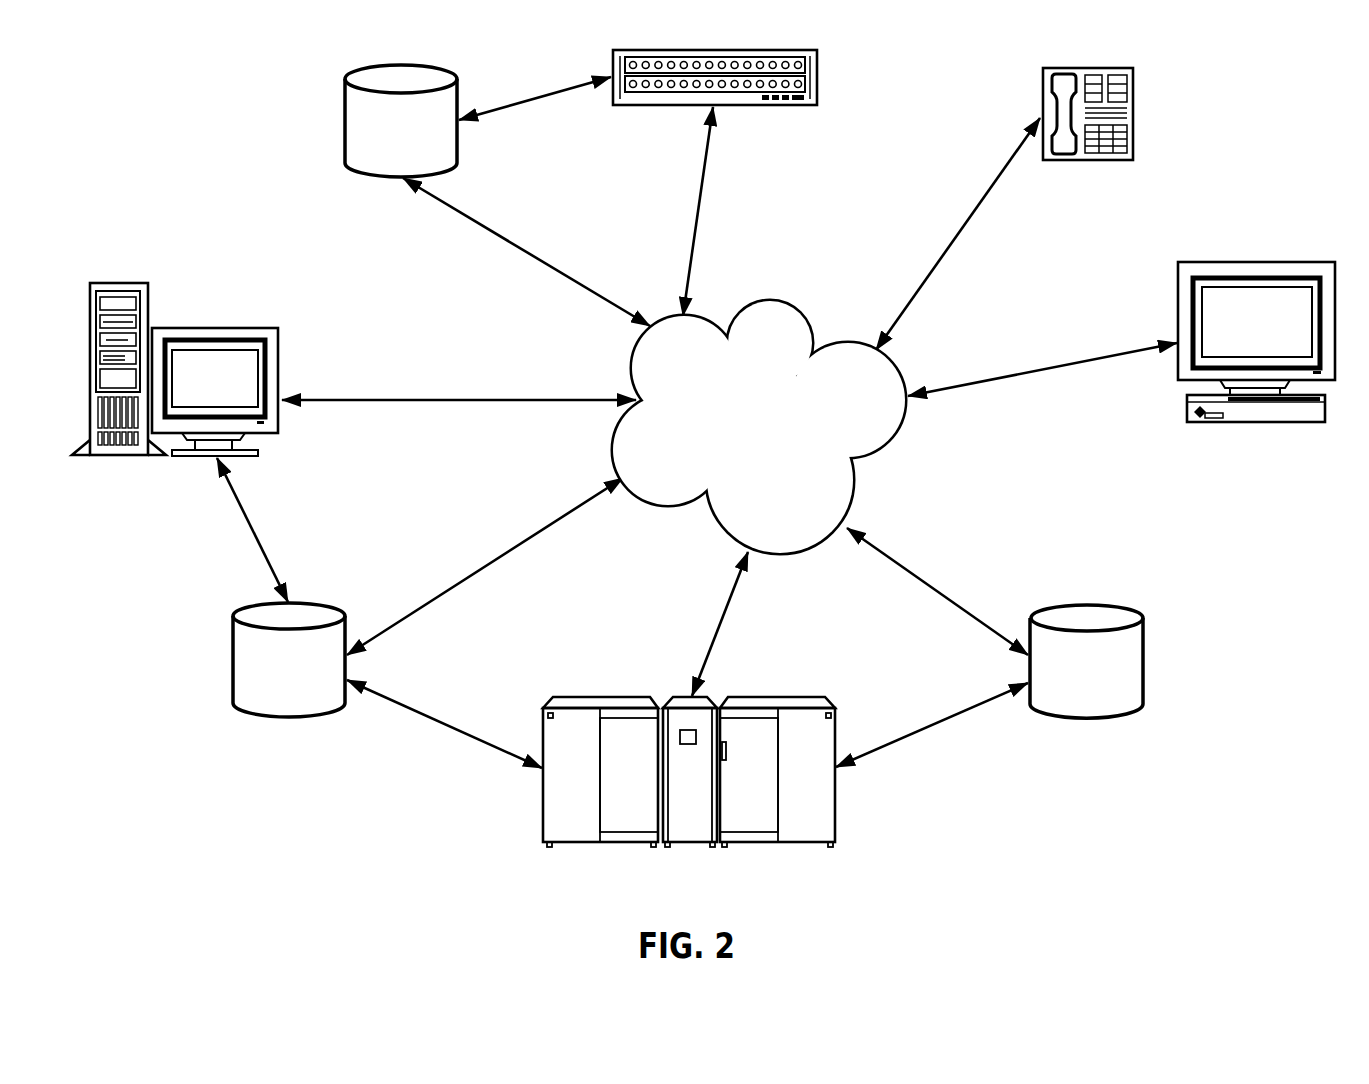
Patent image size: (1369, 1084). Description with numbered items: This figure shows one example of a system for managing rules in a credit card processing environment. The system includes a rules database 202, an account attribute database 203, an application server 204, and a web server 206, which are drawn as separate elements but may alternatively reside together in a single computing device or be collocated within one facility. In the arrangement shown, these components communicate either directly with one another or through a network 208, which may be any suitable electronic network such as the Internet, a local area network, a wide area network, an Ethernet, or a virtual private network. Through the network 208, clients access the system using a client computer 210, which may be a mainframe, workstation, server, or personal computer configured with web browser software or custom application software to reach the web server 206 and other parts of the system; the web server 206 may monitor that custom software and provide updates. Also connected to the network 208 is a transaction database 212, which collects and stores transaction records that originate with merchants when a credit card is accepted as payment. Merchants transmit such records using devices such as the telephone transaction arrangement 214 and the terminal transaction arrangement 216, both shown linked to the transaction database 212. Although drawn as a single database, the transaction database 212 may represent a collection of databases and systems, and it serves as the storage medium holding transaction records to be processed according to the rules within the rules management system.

The rules database 202 is at (289, 660).
The account attribute database 203 is at (1086, 661).
The application server 204 is at (805, 697).
The web server 206 is at (190, 328).
The network 208 is at (759, 427).
The client computer 210 is at (1298, 262).
The transaction database 212 is at (401, 121).
The telephone transaction arrangement 214 is at (1135, 88).
The terminal transaction arrangement 216 is at (818, 68).